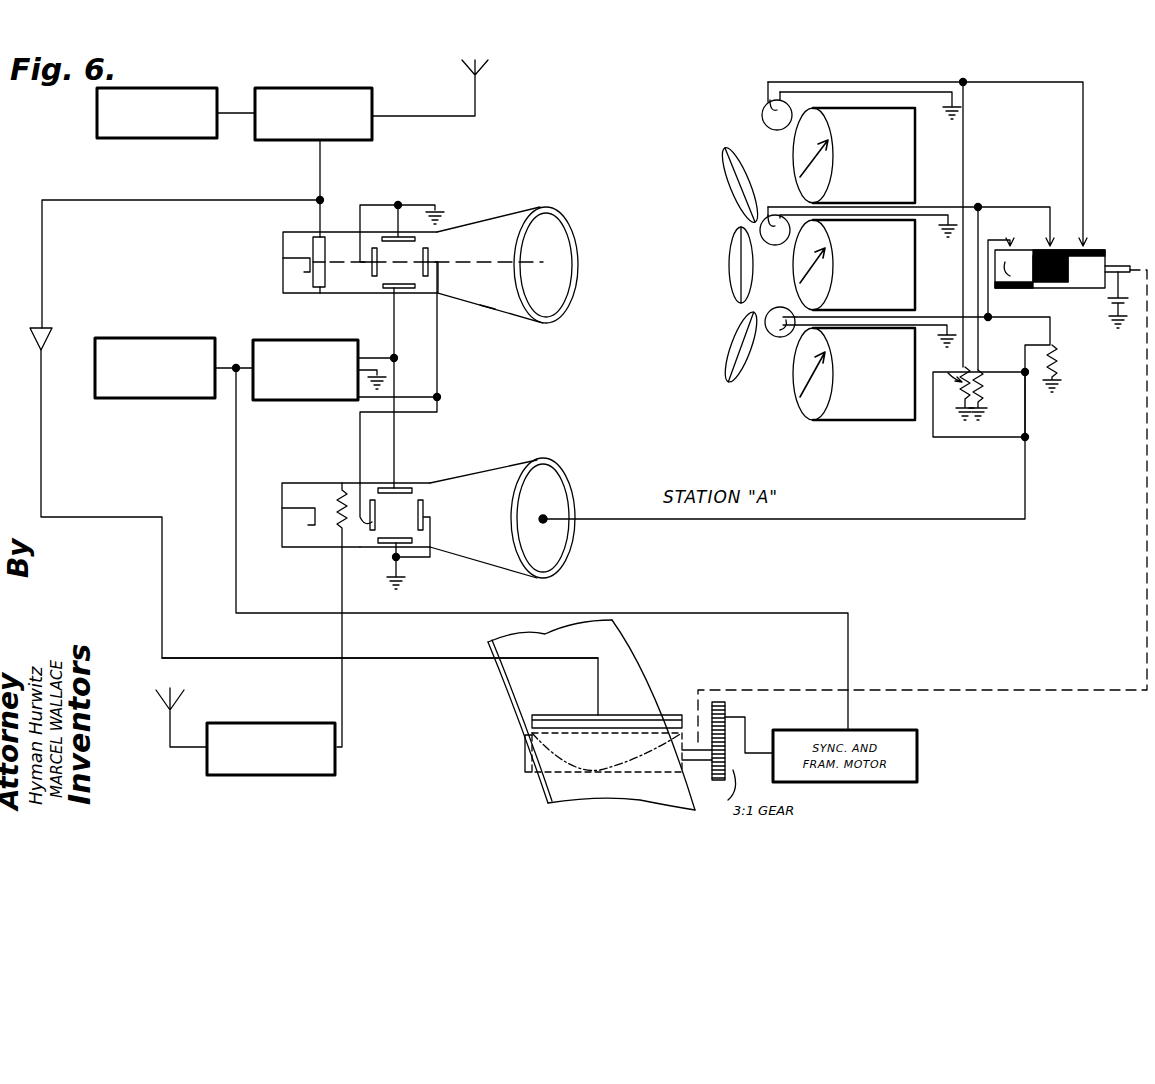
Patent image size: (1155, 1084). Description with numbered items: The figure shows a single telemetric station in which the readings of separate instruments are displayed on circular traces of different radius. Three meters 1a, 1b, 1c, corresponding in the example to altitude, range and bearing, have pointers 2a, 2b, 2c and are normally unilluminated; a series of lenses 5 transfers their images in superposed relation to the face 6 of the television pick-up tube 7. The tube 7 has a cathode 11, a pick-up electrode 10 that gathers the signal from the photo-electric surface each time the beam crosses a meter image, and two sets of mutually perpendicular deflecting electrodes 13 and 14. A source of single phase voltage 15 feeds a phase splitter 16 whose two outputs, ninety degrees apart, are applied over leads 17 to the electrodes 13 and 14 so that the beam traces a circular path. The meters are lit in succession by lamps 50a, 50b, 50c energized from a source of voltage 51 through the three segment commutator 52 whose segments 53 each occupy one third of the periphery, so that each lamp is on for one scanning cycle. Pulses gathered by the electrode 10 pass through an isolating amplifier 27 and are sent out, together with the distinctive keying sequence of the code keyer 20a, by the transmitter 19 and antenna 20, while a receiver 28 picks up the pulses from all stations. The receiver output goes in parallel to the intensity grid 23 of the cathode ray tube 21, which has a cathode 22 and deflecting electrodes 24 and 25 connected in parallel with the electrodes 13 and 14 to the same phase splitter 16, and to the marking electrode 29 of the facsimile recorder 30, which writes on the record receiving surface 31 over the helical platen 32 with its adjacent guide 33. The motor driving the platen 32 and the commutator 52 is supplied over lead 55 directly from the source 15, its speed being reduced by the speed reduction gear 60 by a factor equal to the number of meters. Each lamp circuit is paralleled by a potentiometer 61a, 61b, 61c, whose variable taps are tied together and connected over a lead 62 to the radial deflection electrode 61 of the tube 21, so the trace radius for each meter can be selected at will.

The meter 1a is at (843, 420).
The meter 1b is at (925, 275).
The meter 1c is at (925, 145).
The meter pointer 2a is at (818, 367).
The meter pointer 2b is at (822, 255).
The meter pointer 2c is at (812, 160).
The lens 5 is at (724, 152).
The face of the tube 6 is at (540, 210).
The viewing tube 7 is at (487, 306).
The pick-up electrode 10 is at (320, 293).
The cathode 11 is at (301, 258).
The beam deflecting electrodes 13 is at (383, 288).
The beam deflecting electrodes 14 is at (430, 250).
The source of single phase voltage 15 is at (150, 398).
The phase splitter 16 is at (303, 400).
The leads 17 is at (404, 352).
The transmitter 19 is at (372, 95).
The transmitting antenna 20 is at (480, 70).
The code keyer 20a is at (214, 92).
The cathode ray tube 21 is at (490, 473).
The cathode 22 is at (300, 508).
The intensity grid 23 is at (347, 488).
The deflecting electrode 24 is at (408, 488).
The deflecting electrode 25 is at (370, 527).
The isolating amplifier 27 is at (50, 338).
The receiver 28 is at (262, 710).
The marking electrode 29 is at (660, 715).
The facsimile recorder 30 is at (591, 719).
The record receiving surface 31 is at (515, 676).
The helical platen 32 is at (650, 760).
The chart guide 33 is at (530, 748).
The lamp 50a is at (772, 335).
The lamp 50b is at (773, 245).
The lamp 50c is at (762, 118).
The source of voltage 51 is at (1110, 305).
The commutator 52 is at (1060, 288).
The commutator segments 53 is at (1105, 252).
The lead 55 is at (662, 600).
The speed reduction gear 60 is at (725, 712).
The radial deflection electrode 61 is at (546, 516).
The potentiometer 61a is at (1055, 360).
The potentiometer 61b is at (990, 375).
The potentiometer 61c is at (950, 372).
The lead 62 is at (905, 519).